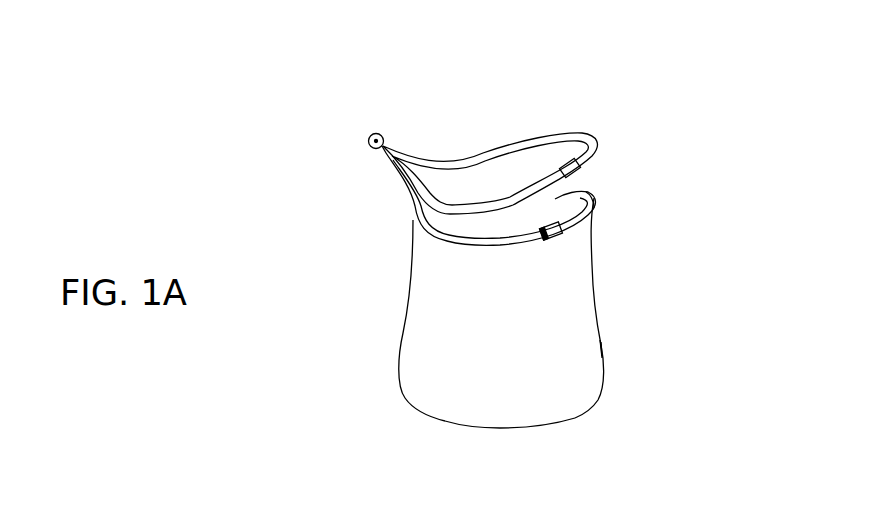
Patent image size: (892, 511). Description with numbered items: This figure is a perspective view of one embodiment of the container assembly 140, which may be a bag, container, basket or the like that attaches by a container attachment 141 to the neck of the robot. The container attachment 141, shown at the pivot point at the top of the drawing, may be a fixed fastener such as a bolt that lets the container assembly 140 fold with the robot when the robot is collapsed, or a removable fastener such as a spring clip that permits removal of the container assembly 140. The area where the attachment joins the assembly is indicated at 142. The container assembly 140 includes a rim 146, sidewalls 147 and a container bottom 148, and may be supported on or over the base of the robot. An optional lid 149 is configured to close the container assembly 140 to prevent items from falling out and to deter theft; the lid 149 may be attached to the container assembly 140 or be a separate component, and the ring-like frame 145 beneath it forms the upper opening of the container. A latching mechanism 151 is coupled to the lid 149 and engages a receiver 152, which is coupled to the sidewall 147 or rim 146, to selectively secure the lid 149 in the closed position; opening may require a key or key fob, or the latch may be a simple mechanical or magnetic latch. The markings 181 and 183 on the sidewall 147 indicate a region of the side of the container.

The container assembly 140 is at (408, 300).
The container attachment 141 is at (369, 136).
The hinge joint 142 is at (410, 128).
The lower ring 145 is at (556, 205).
The rim 146 is at (595, 232).
The sidewalls 147 is at (594, 298).
The container bottom 148 is at (496, 435).
The lid 149 is at (521, 167).
The latching mechanism 151 is at (580, 168).
The receiver 152 is at (556, 238).
The width indicator 181 is at (618, 348).
The side region 183 is at (582, 348).